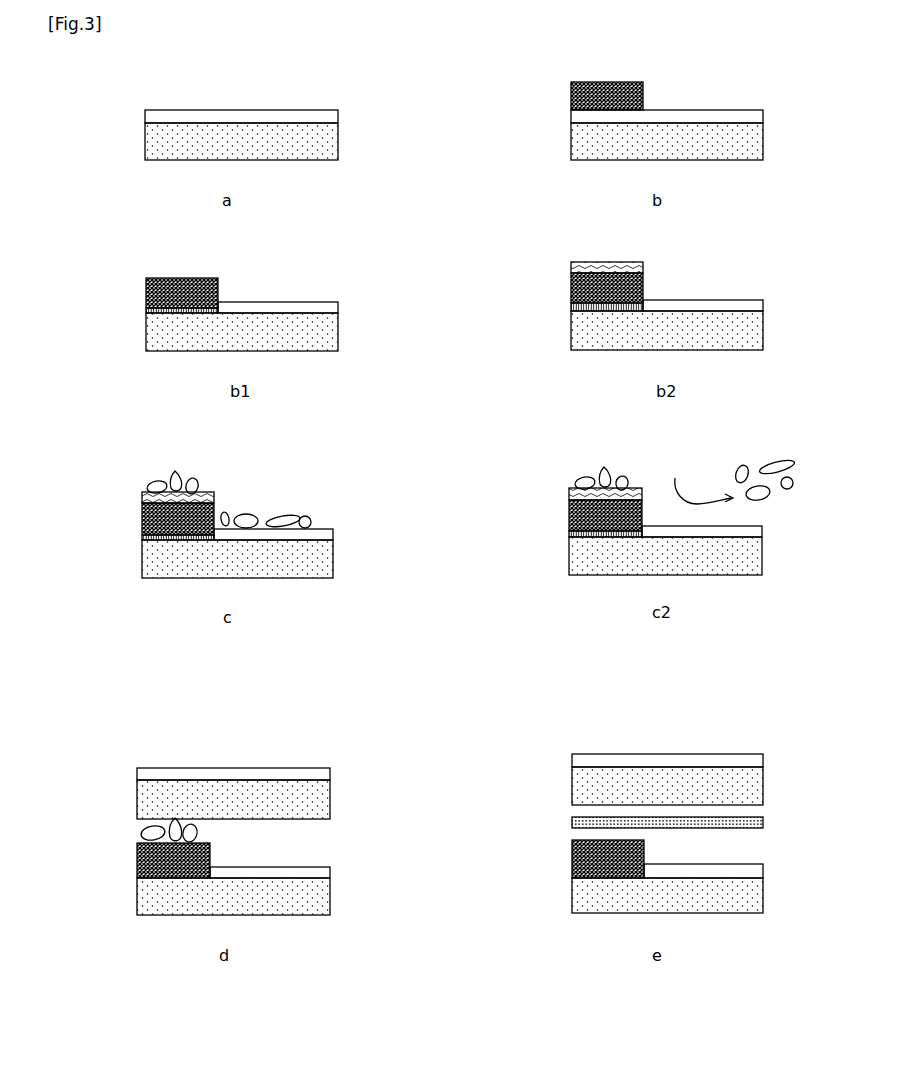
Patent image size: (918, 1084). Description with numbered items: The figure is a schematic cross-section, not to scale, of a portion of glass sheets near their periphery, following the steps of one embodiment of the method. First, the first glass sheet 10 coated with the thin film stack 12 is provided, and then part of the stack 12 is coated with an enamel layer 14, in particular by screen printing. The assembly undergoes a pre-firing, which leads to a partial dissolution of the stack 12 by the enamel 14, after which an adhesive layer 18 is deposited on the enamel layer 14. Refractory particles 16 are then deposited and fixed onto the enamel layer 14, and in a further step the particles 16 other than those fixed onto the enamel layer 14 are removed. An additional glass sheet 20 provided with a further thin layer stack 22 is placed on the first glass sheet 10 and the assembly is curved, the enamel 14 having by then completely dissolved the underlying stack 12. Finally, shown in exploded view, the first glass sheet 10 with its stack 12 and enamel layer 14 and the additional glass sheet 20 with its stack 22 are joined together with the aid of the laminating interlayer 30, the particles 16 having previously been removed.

The first glass sheet 10 is at (412, 520).
The thin film stack 12 is at (446, 493).
The enamel layer 14 is at (353, 475).
The refractory particles 16 is at (282, 512).
The adhesive layer 18 is at (354, 380).
The additional glass sheet 20 is at (412, 793).
The further thin layer stack 22 is at (412, 770).
The laminating interlayer 30 is at (697, 814).